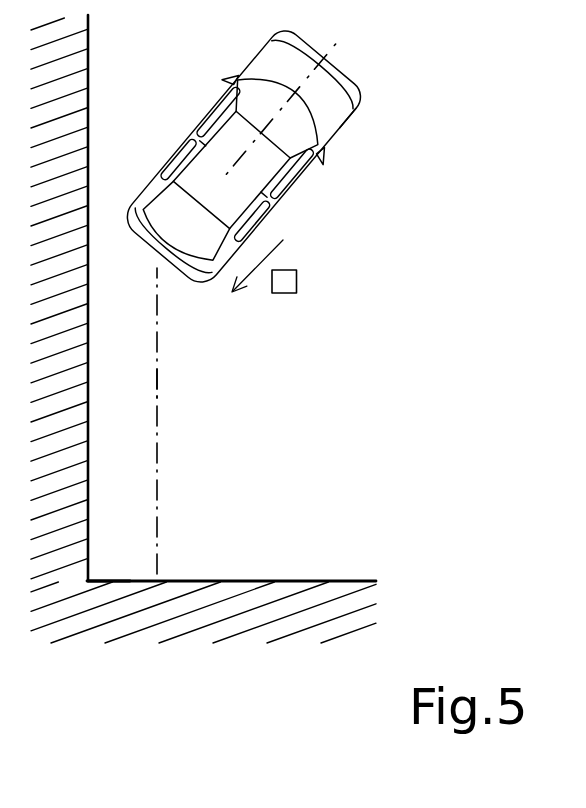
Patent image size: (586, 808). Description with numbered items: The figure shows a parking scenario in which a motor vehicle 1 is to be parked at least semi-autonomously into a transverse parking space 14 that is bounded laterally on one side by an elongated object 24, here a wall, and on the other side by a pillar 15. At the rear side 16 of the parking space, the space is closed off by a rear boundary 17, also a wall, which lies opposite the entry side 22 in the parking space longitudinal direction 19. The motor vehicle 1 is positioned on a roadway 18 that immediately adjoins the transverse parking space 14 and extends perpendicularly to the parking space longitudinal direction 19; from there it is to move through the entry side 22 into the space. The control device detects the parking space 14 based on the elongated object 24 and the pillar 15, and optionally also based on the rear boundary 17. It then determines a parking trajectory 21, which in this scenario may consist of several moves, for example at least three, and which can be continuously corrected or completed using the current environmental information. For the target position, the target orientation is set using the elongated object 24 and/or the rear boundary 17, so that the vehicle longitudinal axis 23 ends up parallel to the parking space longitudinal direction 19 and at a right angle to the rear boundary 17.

The motor vehicle 1 is at (208, 110).
The transverse parking space 14 is at (205, 458).
The pillar 15 is at (290, 280).
The rear side 16 is at (302, 560).
The rear boundary 17 is at (121, 580).
The roadway 18 is at (474, 200).
The parking space longitudinal direction 19 is at (160, 368).
The parking trajectory 21 is at (175, 388).
The entry side 22 is at (275, 253).
The vehicle longitudinal axis 23 is at (348, 112).
The elongated object 24 is at (90, 352).